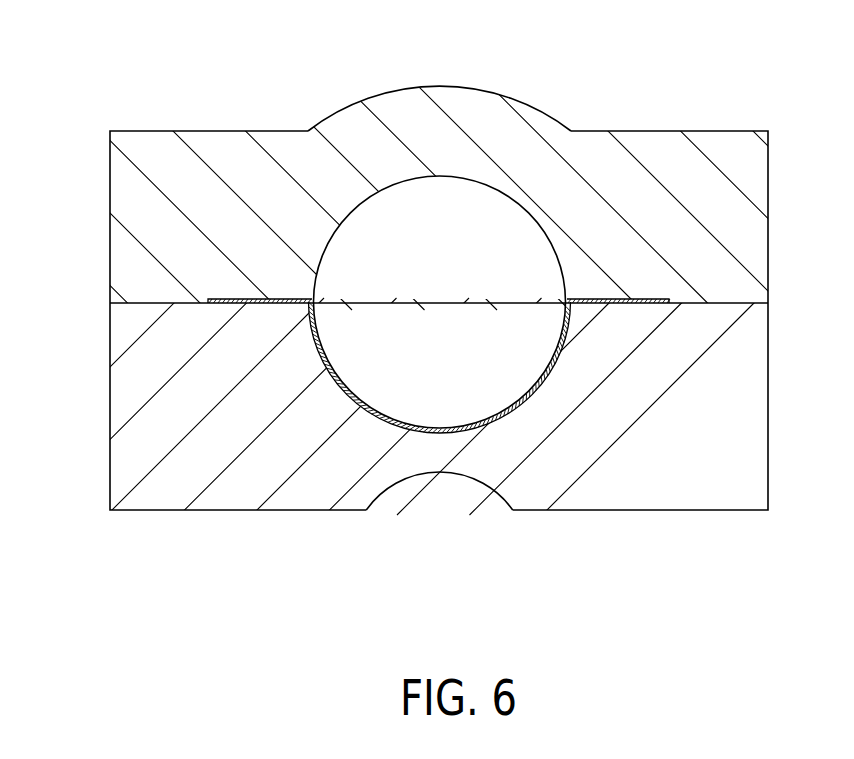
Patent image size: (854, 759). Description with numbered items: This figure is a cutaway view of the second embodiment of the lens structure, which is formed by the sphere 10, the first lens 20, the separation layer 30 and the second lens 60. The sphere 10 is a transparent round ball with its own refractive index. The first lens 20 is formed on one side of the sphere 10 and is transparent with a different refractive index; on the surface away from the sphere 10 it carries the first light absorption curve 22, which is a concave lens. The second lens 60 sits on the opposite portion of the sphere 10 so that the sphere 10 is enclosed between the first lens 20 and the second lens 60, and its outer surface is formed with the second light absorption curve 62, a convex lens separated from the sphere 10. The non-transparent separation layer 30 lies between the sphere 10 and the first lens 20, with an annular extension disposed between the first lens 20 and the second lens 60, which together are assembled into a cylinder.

The sphere 10 is at (365, 230).
The first lens 20 is at (747, 357).
The first light absorption curve 22 is at (457, 478).
The separation layer 30 is at (340, 393).
The second lens 60 is at (130, 190).
The second light absorption curve 62 is at (483, 90).